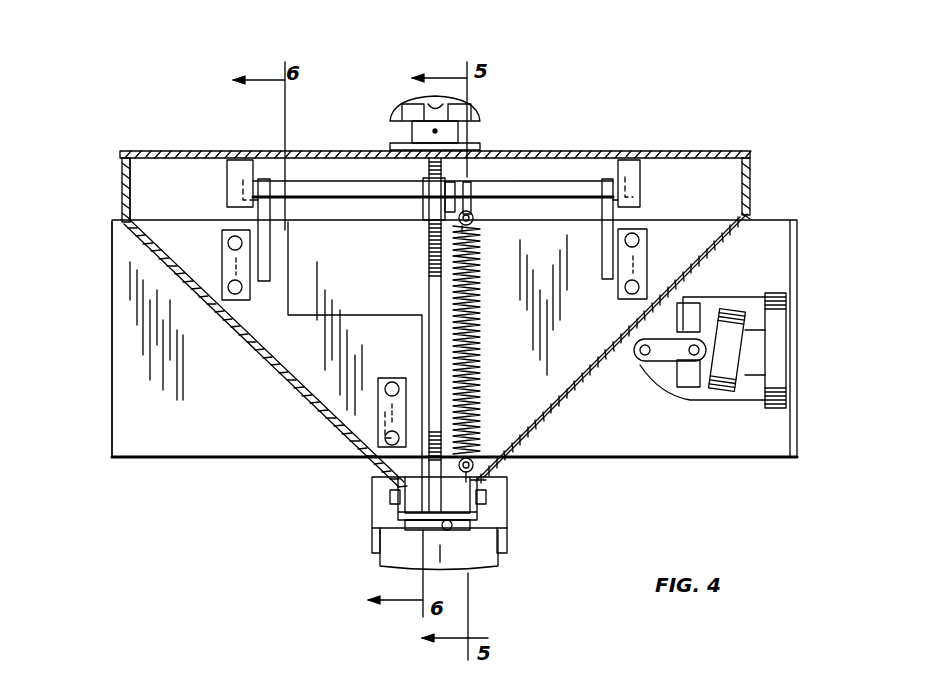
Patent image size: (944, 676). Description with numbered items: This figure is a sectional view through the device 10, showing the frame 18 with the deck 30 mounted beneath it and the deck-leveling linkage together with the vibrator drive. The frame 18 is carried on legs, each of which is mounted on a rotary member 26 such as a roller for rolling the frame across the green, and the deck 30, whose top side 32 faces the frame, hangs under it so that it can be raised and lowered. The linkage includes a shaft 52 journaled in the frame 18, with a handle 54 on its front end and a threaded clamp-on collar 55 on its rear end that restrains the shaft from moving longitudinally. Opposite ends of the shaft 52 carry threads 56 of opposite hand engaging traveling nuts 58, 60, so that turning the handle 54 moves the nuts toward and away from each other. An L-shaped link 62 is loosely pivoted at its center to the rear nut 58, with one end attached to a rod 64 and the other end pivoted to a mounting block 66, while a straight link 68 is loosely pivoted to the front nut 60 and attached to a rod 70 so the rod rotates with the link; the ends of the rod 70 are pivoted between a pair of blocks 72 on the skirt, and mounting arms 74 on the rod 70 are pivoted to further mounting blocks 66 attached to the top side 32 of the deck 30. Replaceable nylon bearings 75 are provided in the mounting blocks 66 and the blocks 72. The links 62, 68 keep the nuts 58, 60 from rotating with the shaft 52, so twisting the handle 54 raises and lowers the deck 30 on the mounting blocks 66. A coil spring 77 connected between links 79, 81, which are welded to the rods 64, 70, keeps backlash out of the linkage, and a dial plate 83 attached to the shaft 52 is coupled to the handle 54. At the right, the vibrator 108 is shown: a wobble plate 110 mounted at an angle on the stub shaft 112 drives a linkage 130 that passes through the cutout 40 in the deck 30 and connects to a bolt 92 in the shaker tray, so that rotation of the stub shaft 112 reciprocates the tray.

The device 10 is at (744, 72).
The frame 18 is at (620, 150).
The rotary member 26 is at (393, 570).
The deck 30 is at (107, 343).
The top side 32 is at (170, 425).
The cutout 40 is at (730, 303).
The shaft 52 is at (447, 310).
The handle 54 is at (402, 98).
The clamp-on collar 55 is at (407, 530).
The threads 56 is at (482, 240).
The traveling nut 58 is at (450, 537).
The traveling nut 60 is at (417, 187).
The L-shaped link 62 is at (407, 480).
The rod 64 is at (407, 503).
The mounting block 66 is at (222, 257).
The straight link 68 is at (445, 187).
The rod 70 is at (570, 185).
The block 72 is at (240, 167).
The mounting arm 74 is at (262, 245).
The nylon bearing 75 is at (240, 200).
The coil spring 77 is at (478, 277).
The link 79 is at (480, 480).
The link 81 is at (473, 170).
The dial plate 83 is at (390, 150).
The bolt 92 is at (680, 352).
The vibrator 108 is at (805, 322).
The wobble plate 110 is at (740, 310).
The stub shaft 112 is at (767, 390).
The linkage 130 is at (648, 357).